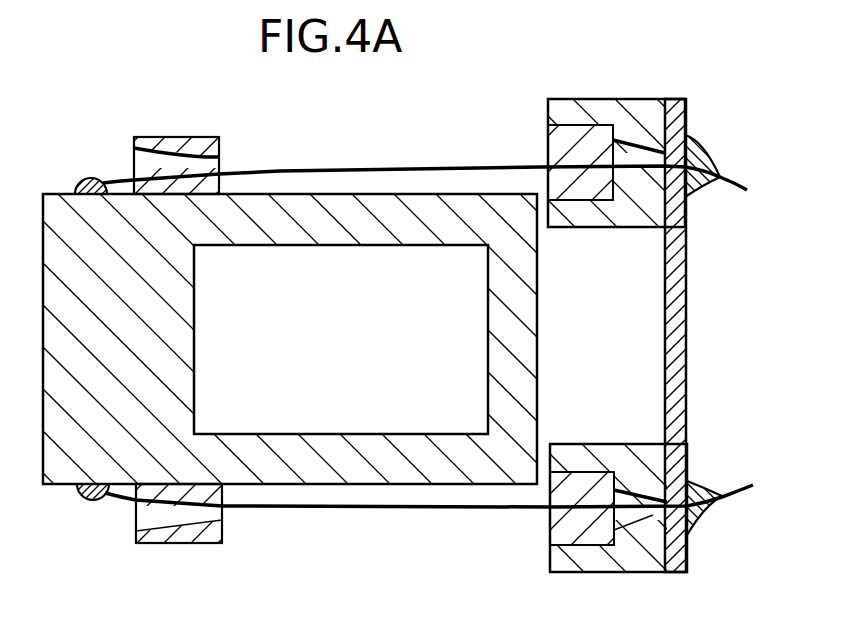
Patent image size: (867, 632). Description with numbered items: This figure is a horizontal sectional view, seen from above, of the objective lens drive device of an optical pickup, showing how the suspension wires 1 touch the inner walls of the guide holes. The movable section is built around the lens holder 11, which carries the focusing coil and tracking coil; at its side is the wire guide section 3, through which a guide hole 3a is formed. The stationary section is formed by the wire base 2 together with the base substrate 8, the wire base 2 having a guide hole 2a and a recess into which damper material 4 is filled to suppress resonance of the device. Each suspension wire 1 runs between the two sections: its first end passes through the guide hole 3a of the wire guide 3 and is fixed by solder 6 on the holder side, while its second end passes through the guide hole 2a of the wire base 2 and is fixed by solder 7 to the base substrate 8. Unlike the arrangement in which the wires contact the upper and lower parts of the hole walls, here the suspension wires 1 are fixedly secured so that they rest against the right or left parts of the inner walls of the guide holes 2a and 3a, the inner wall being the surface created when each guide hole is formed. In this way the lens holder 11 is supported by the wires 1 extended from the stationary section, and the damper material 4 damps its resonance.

The suspension wire 1 is at (415, 169).
The wire base 2 is at (640, 101).
The guide hole of the wire base 2a is at (628, 540).
The wire guide section 3 is at (169, 145).
The guide hole of the wire guide 3a is at (212, 513).
The damper material 4 is at (550, 131).
The solder fixing to holder substrate 6 is at (95, 180).
The solder fixing to base substrate 7 is at (704, 155).
The base substrate 8 is at (680, 264).
The lens holder 11 is at (304, 197).